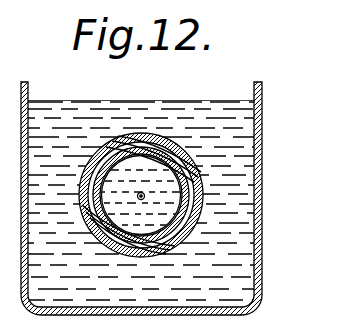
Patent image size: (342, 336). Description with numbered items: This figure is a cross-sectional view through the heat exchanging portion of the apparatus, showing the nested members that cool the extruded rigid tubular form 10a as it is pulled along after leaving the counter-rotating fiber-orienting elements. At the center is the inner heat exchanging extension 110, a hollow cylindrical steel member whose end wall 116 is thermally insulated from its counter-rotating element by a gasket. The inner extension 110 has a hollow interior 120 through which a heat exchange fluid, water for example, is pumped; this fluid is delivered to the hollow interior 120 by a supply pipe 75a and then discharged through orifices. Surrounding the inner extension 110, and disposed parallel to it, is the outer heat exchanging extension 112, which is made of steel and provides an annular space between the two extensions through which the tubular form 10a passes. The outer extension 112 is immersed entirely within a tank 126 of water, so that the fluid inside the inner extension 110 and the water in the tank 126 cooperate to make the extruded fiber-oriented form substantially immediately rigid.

The extruded rigid tubular form 10a is at (100, 236).
The inner heat exchanging extension 110 is at (185, 167).
The outer heat exchanging extension 112 is at (166, 144).
The end wall 116 is at (114, 181).
The hollow interior 120 is at (183, 190).
The tank 126 is at (262, 219).
The supply pipe 75a is at (142, 200).